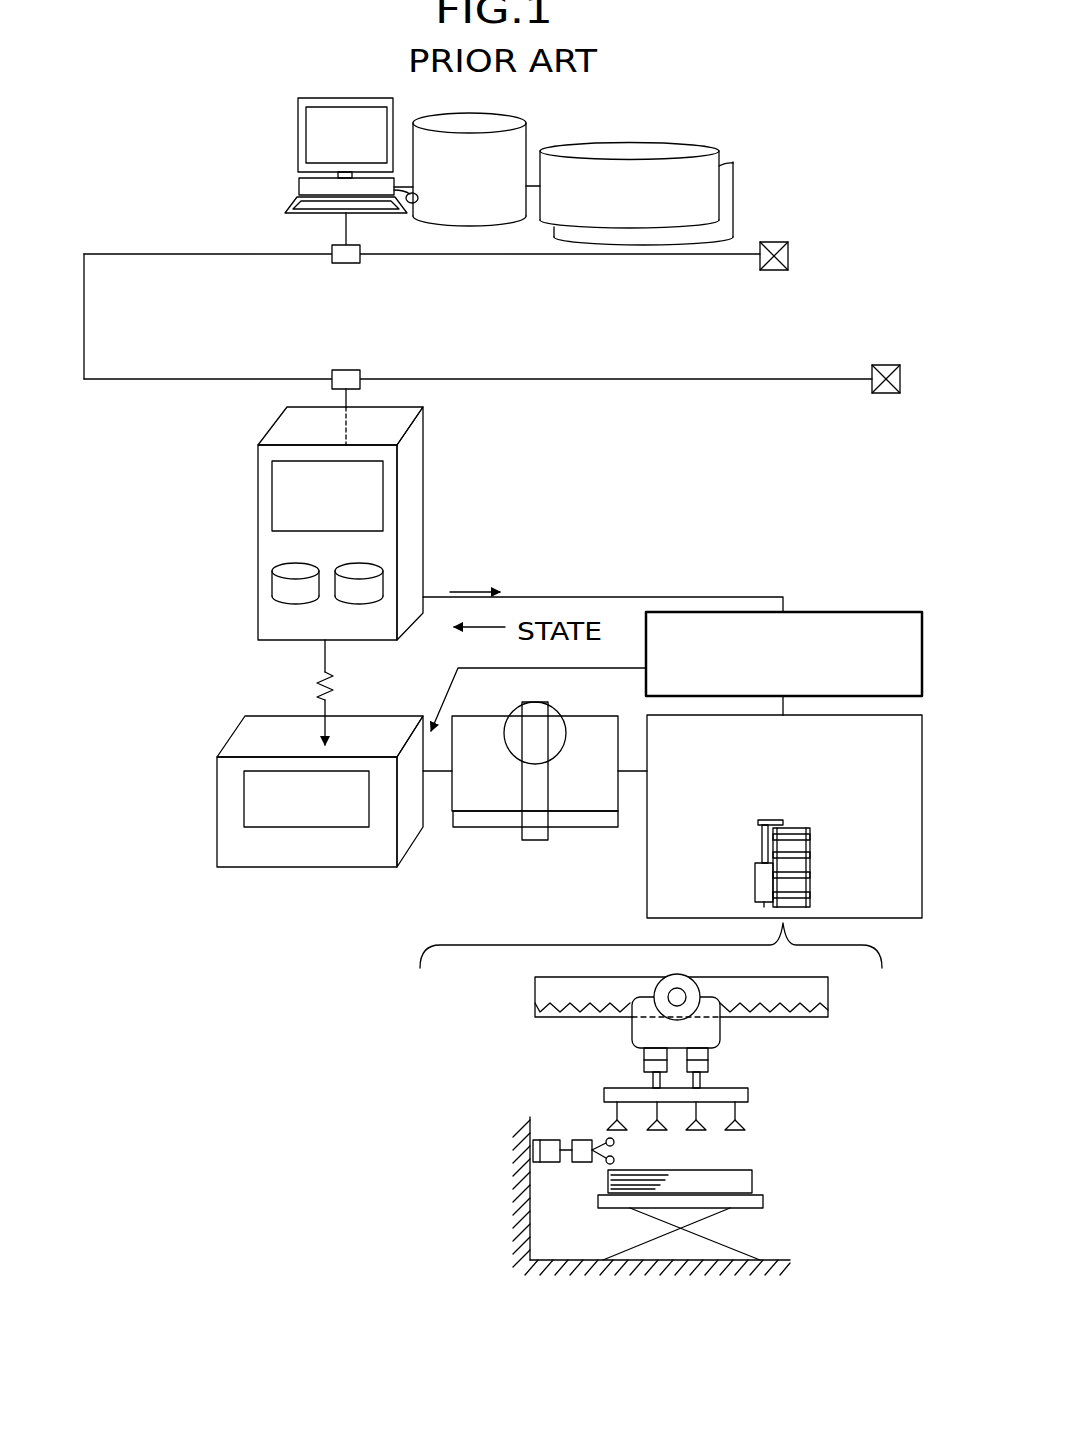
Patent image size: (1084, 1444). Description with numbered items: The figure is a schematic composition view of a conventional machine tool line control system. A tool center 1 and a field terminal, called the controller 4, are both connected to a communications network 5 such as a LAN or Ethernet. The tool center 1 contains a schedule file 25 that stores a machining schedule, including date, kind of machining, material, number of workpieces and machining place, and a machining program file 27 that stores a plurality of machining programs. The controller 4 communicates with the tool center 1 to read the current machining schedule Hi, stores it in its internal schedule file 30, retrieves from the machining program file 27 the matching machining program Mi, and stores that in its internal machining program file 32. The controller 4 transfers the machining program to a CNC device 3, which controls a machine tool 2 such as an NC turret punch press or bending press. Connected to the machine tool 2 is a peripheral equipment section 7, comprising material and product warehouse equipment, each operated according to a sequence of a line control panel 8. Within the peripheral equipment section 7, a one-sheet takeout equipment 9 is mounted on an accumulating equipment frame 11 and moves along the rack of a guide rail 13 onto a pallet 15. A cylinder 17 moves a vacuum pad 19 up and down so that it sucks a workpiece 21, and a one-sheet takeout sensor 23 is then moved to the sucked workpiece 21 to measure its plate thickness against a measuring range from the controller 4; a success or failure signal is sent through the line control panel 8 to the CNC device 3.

The tool center 1 is at (298, 133).
The schedule file 25 is at (527, 121).
The machining program file 27 is at (713, 143).
The communications network 5 is at (531, 379).
The field terminal (controller) 4 is at (432, 523).
The schedule file 30 is at (272, 590).
The machining program file 32 is at (380, 588).
The line control panel 8 is at (900, 612).
The peripheral equipment section 7 is at (923, 718).
The CNC device 3 is at (217, 800).
The machine tool 2 is at (460, 827).
The guide rail 13 is at (535, 992).
The one-sheet takeout equipment 9 is at (612, 1047).
The cylinder 17 is at (710, 1053).
The vacuum pad 19 is at (745, 1122).
The one-sheet takeout sensor 23 is at (580, 1138).
The workpiece 21 is at (753, 1178).
The pallet 15 is at (765, 1202).
The accumulating equipment frame 11 is at (618, 1262).